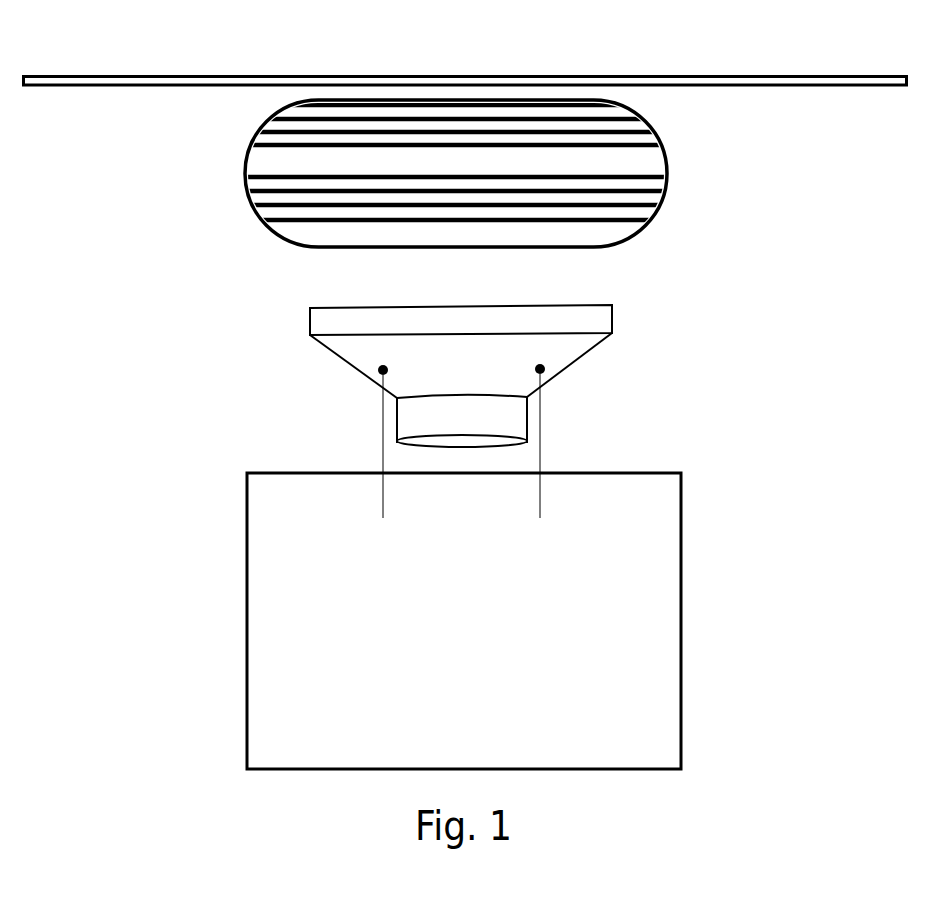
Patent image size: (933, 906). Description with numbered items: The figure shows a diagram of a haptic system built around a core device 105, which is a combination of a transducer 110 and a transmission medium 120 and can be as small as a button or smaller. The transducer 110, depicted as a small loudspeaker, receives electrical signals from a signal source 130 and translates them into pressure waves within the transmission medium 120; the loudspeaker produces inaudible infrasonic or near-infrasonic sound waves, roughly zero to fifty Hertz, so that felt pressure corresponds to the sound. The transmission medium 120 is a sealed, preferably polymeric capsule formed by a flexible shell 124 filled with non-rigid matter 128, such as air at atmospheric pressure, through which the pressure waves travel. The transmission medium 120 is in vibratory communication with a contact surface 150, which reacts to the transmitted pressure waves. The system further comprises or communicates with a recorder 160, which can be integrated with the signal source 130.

The core device 105 is at (778, 312).
The transducer 110 is at (323, 320).
The transmission medium 120 is at (458, 173).
The flexible shell 124 is at (253, 210).
The non-rigid matter 128 is at (280, 157).
The signal source 130 is at (508, 621).
The contact surface 150 is at (208, 75).
The recorder 160 is at (662, 692).